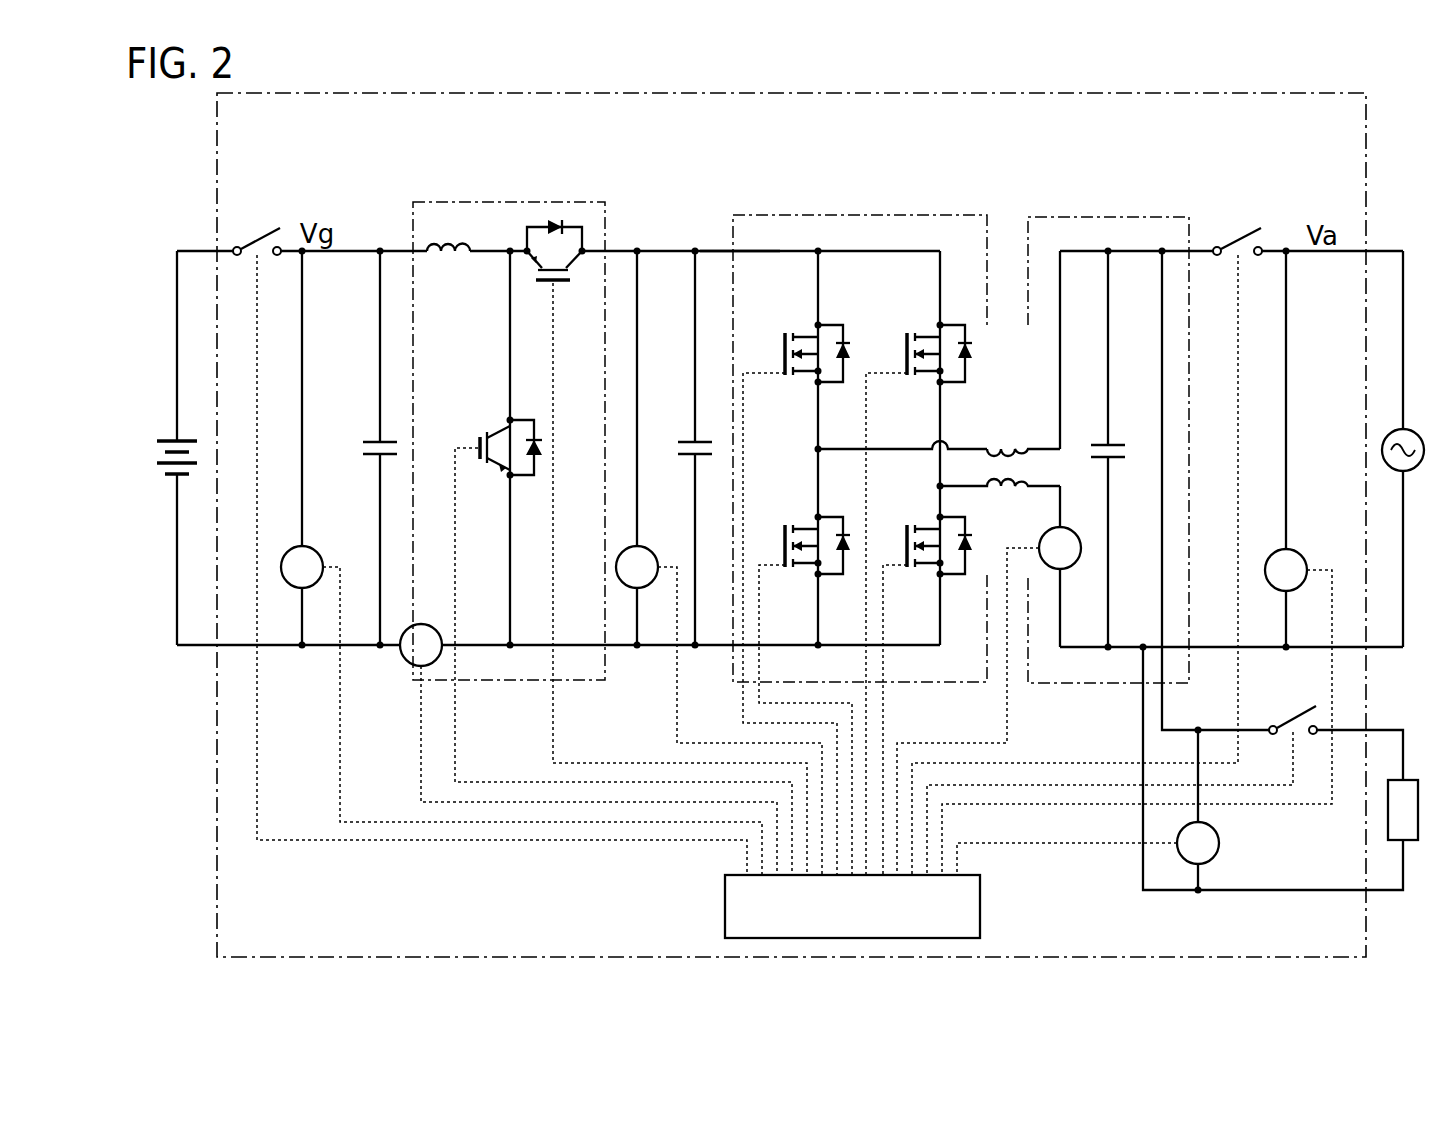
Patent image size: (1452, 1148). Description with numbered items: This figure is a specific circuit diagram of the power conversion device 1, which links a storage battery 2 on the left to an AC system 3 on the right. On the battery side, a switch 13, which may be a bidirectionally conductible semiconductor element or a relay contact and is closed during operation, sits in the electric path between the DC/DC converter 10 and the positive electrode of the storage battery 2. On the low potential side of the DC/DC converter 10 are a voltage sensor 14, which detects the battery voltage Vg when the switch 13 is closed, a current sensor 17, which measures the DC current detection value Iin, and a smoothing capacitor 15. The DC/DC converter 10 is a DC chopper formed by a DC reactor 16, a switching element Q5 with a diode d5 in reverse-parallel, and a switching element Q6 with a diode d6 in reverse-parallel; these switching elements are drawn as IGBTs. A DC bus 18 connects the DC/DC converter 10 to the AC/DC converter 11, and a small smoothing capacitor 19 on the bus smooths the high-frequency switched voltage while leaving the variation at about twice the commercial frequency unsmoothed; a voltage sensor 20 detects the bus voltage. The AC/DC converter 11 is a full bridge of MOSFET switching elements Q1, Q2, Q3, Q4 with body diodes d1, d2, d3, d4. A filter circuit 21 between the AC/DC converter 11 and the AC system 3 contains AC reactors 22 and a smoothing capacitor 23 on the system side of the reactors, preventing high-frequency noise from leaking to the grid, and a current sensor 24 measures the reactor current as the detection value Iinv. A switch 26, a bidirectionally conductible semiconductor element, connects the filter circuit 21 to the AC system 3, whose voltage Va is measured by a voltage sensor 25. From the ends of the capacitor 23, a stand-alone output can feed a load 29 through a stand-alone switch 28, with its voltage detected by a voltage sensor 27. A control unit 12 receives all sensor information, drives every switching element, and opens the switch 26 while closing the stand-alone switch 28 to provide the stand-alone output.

The power conversion device 1 is at (1366, 145).
The storage battery 2 is at (168, 430).
The AC system 3 is at (1413, 432).
The DC/DC converter 10 is at (525, 200).
The AC/DC converter 11 is at (885, 213).
The control unit 12 is at (982, 910).
The switch 13 is at (259, 240).
The voltage sensor 14 is at (315, 549).
The smoothing capacitor 15 is at (376, 441).
The DC reactor 16 is at (446, 257).
The current sensor 17 is at (404, 660).
The DC bus 18 is at (668, 246).
The smoothing capacitor 19 is at (690, 441).
The voltage sensor 20 is at (650, 549).
The filter circuit 21 is at (1095, 215).
The AC reactors 22 is at (1013, 459).
The smoothing capacitor 23 is at (1103, 441).
The current sensor 24 is at (1072, 532).
The voltage sensor 25 is at (1305, 554).
The switch 26 is at (1243, 239).
The voltage sensor 27 is at (1220, 843).
The stand-alone switch 28 is at (1292, 724).
The load 29 is at (1418, 815).
The switching element Q1 is at (905, 588).
The switching element Q2 is at (913, 683).
The switching element Q3 is at (790, 588).
The switching element Q4 is at (805, 683).
The switching element Q5 is at (667, 551).
The switching element Q6 is at (623, 638).
The diode d1 is at (971, 353).
The diode d2 is at (971, 545).
The diode d3 is at (849, 353).
The diode d4 is at (838, 561).
The diode d5 is at (527, 224).
The diode d6 is at (529, 464).